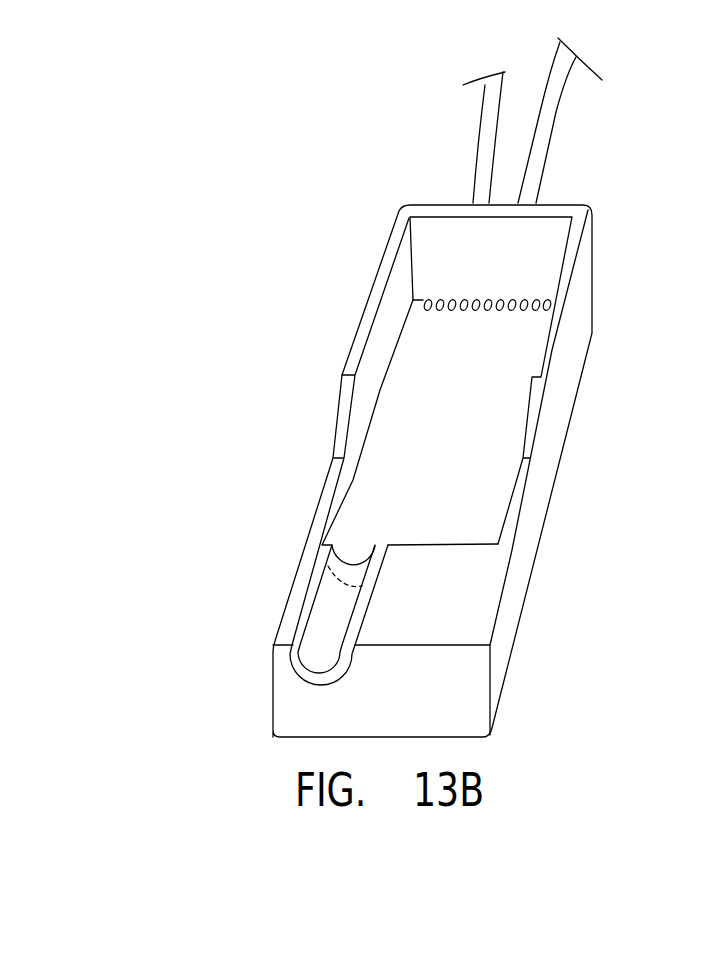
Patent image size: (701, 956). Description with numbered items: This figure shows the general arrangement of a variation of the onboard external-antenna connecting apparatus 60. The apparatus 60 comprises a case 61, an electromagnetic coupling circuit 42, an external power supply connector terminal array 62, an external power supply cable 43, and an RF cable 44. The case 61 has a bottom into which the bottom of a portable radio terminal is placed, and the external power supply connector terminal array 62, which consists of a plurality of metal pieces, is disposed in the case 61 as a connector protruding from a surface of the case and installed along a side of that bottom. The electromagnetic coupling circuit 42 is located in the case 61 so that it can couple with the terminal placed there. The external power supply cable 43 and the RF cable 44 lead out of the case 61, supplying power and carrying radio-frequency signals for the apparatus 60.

The onboard external-antenna connecting apparatus 60 is at (606, 592).
The case 61 is at (561, 406).
The external power supply connector terminal array 62 is at (513, 291).
The electromagnetic coupling circuit 42 is at (322, 616).
The external power supply cable 43 is at (478, 158).
The RF cable 44 is at (542, 148).